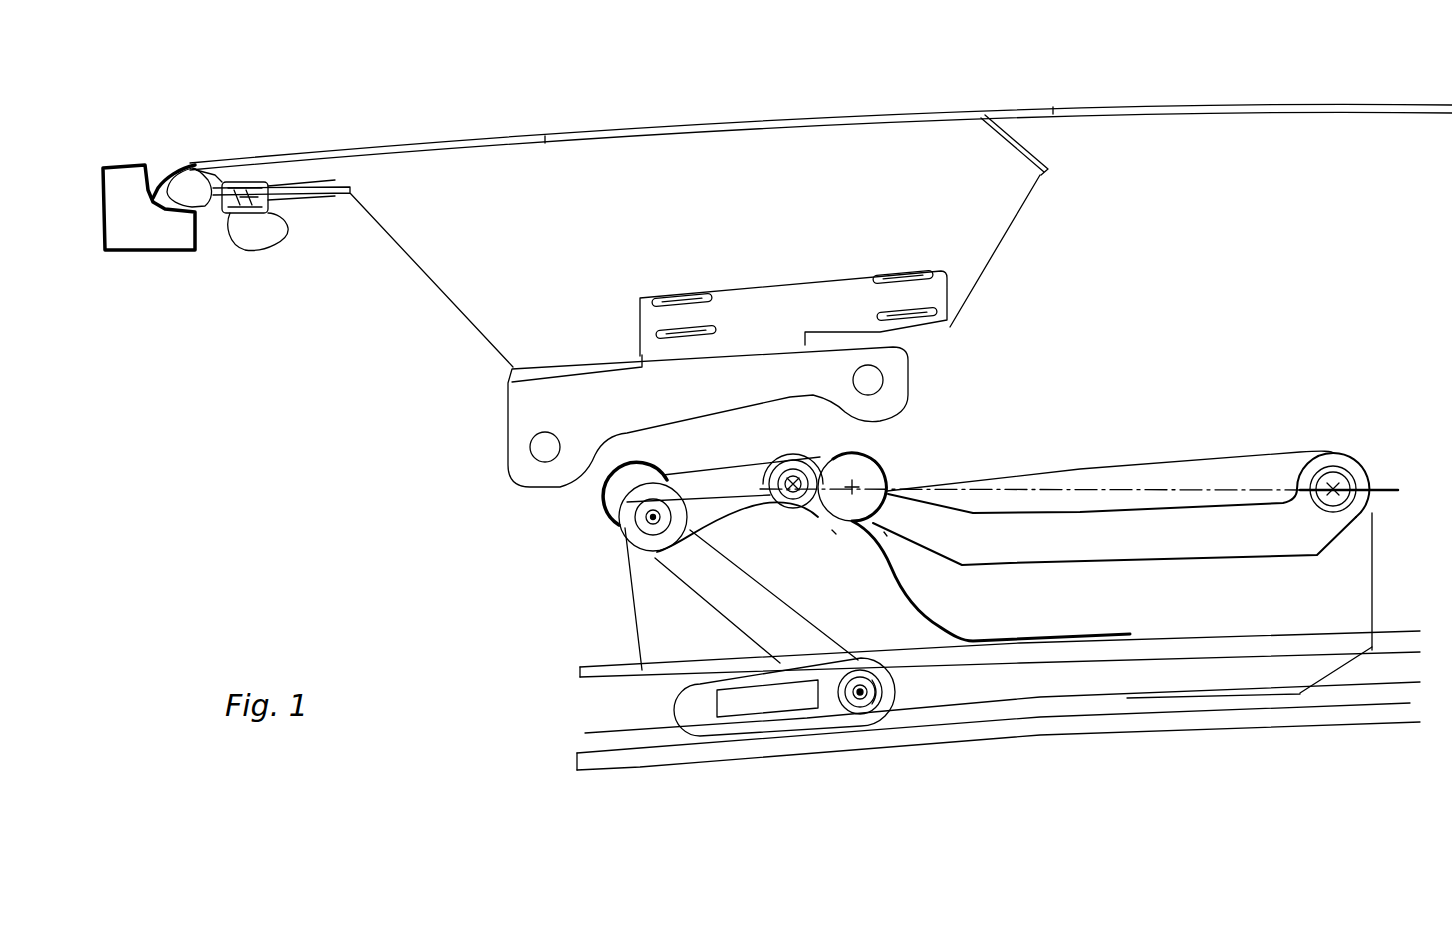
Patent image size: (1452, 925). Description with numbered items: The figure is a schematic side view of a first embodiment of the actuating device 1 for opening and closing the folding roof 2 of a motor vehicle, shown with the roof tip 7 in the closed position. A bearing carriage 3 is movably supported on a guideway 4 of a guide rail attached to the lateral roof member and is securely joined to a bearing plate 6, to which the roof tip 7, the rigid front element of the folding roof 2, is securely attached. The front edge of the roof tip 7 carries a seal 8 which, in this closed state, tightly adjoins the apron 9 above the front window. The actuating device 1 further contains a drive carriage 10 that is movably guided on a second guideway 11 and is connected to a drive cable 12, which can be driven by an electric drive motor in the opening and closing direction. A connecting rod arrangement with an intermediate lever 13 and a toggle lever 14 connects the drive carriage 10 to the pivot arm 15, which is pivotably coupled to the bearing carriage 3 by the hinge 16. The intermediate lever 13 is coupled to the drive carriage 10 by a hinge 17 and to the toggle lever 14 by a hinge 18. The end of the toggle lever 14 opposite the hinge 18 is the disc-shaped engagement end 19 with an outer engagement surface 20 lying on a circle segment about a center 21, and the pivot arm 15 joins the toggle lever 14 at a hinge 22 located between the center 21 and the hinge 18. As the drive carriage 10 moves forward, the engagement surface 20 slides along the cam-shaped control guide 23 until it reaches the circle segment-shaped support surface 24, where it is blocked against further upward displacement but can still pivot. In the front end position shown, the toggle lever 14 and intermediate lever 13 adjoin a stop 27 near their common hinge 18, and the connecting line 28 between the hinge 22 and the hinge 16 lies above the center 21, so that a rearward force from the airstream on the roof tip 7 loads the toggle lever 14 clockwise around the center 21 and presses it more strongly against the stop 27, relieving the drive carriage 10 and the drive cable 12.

The actuating device 1 is at (526, 642).
The folding roof 2 is at (1025, 98).
The bearing carriage 3 is at (1257, 443).
The guideway 4 is at (1393, 614).
The bearing plate 6 is at (765, 372).
The roof tip 7 is at (367, 152).
The seal 8 is at (205, 208).
The apron 9 is at (140, 223).
The drive carriage 10 is at (710, 710).
The second guideway 11 is at (565, 730).
The drive cable 12 is at (1372, 668).
The intermediate lever 13 is at (716, 617).
The toggle lever 14 is at (701, 488).
The pivot arm 15 is at (1181, 573).
The hinge 16 is at (1340, 488).
The hinge 17 is at (858, 703).
The hinge 18 is at (653, 517).
The engagement end 19 is at (828, 538).
The engagement surface 20 is at (872, 547).
The center 21 is at (862, 470).
The hinge 22 is at (802, 478).
The control guide 23 is at (917, 607).
The support surface 24 is at (864, 482).
The stop 27 is at (620, 487).
The connecting line 28 is at (1127, 489).